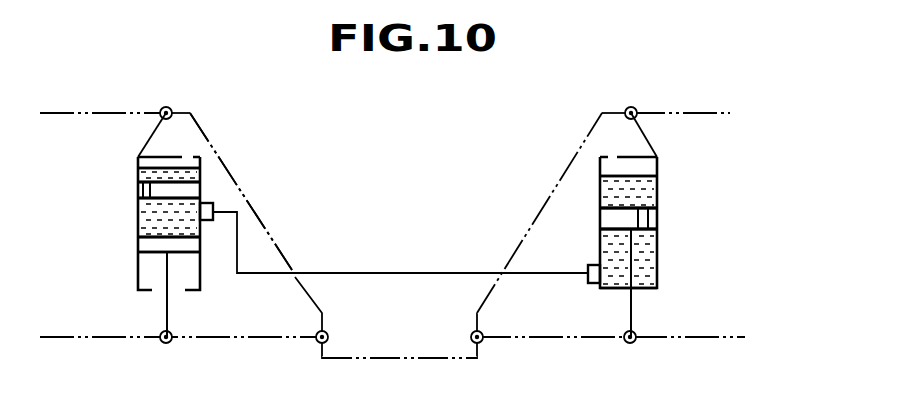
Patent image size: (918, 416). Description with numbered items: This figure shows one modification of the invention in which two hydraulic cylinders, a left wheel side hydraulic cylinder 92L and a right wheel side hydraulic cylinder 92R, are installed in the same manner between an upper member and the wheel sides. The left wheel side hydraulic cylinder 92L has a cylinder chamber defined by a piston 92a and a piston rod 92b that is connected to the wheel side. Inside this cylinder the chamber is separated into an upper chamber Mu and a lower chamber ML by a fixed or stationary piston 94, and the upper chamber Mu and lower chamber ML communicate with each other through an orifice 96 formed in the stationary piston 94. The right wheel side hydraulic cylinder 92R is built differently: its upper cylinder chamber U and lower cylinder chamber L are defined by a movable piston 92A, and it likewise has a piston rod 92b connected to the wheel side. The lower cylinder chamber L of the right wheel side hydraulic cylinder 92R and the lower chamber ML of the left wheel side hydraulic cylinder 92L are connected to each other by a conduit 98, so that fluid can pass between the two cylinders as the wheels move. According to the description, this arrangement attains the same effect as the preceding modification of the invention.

The left wheel side hydraulic cylinder 92L is at (119, 132).
The right wheel side hydraulic cylinder 92R is at (675, 143).
The upper chamber Mu is at (138, 172).
The lower chamber ML is at (138, 222).
The orifice 96 is at (143, 190).
The piston 92a is at (140, 245).
The piston rod 92b is at (167, 312).
The stationary piston 94 is at (193, 189).
The conduit 98 is at (382, 273).
The upper cylinder chamber U is at (650, 187).
The movable piston 92A is at (600, 218).
The lower cylinder chamber L is at (650, 270).